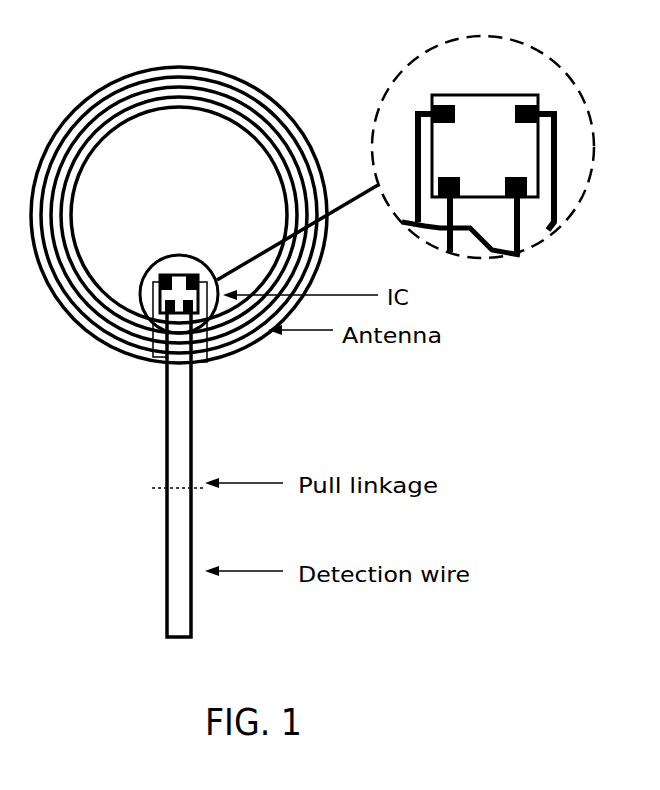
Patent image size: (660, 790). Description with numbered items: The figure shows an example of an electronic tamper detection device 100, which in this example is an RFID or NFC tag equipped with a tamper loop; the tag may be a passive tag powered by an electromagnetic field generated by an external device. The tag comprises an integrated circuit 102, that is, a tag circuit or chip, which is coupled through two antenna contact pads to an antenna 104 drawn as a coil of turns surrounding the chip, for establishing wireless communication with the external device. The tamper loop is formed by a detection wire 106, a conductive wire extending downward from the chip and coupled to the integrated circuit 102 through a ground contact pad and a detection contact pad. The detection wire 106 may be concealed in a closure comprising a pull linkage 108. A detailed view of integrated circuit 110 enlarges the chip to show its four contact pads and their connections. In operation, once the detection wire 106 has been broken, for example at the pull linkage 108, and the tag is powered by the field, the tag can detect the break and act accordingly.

The tamper detection device 100 is at (185, 343).
The integrated circuit 102 is at (139, 311).
The antenna 104 is at (140, 361).
The detection wire 106 is at (165, 540).
The pull linkage 108 is at (167, 483).
The detailed view of integrated circuit 110 is at (582, 92).